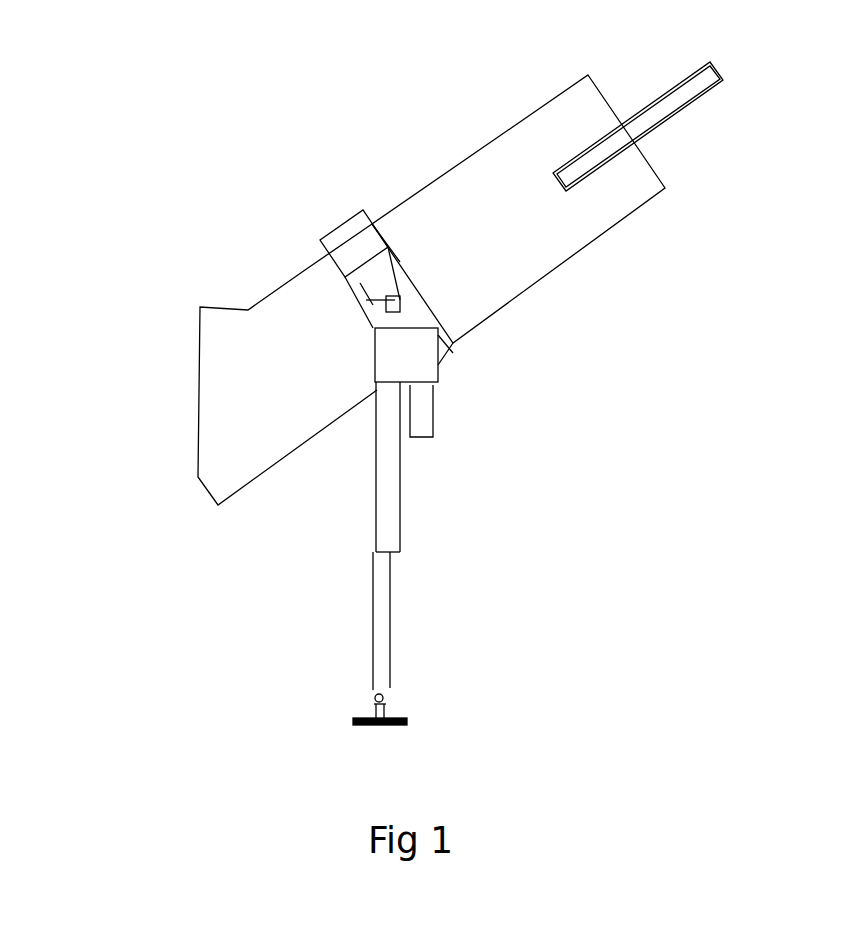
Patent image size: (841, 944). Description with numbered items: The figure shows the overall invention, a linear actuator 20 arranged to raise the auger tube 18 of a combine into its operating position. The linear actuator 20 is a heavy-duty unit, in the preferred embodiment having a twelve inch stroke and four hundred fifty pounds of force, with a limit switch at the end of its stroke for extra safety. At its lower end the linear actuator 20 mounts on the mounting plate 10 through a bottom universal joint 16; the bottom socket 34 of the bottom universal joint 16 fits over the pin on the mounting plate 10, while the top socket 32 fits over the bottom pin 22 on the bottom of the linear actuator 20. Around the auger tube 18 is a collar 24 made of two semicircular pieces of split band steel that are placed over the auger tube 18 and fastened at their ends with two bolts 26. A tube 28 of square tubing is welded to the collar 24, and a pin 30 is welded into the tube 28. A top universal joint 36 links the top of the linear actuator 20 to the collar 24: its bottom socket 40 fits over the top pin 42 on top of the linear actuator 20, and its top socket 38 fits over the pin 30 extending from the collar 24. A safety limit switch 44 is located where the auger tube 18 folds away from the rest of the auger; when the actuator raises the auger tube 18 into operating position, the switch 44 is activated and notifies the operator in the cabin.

The mounting plate 10 is at (353, 722).
The bottom universal joint 16 is at (383, 703).
The auger tube 18 is at (620, 185).
The linear actuator 20 is at (387, 502).
The bottom pin 22 is at (382, 687).
The collar 24 is at (373, 242).
The bolts 26 is at (333, 242).
The tube 28 is at (387, 275).
The pin 30 is at (362, 285).
The top socket 32 is at (377, 697).
The bottom socket 34 is at (407, 725).
The top universal joint 36 is at (398, 306).
The top socket 38 is at (386, 316).
The bottom socket 40 is at (378, 330).
The top pin 42 is at (385, 329).
The safety limit switch 44 is at (190, 305).